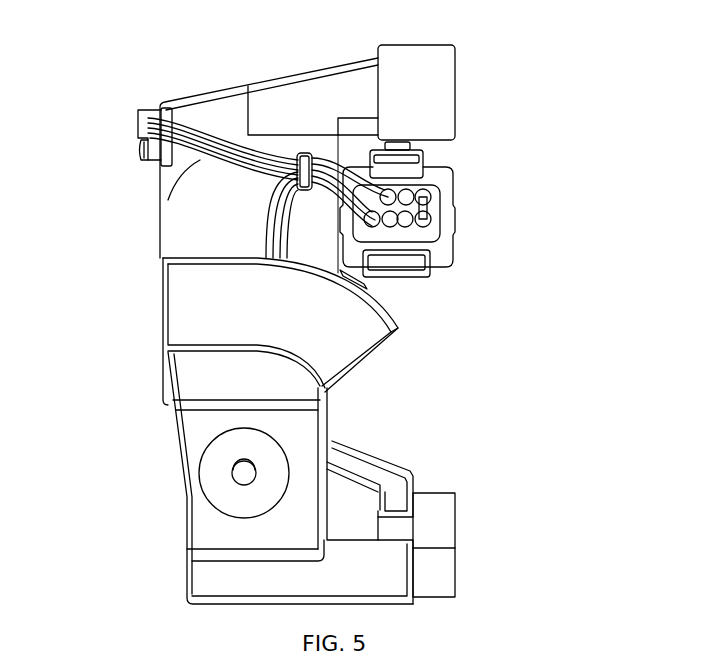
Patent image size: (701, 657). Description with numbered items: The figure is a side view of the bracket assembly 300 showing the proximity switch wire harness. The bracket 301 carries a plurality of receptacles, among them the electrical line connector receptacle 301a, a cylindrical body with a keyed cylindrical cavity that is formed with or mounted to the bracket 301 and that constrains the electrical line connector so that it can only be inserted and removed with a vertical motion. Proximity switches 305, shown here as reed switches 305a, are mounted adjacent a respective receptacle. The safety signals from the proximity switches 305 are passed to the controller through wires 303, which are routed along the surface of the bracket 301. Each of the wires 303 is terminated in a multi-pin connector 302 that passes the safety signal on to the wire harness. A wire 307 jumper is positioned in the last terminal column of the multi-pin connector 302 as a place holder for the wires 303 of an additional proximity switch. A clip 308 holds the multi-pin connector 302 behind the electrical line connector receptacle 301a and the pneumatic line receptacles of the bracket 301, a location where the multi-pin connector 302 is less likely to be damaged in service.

The bracket assembly 300 is at (583, 219).
The bracket 301 is at (442, 80).
The electrical line connector receptacle 301a is at (148, 175).
The multi-pin connector 302 is at (422, 247).
The wires 303 is at (262, 226).
The proximity switches 305 is at (158, 97).
The reed switches 305a is at (137, 118).
The wire jumper 307 is at (450, 205).
The clip 308 is at (412, 147).